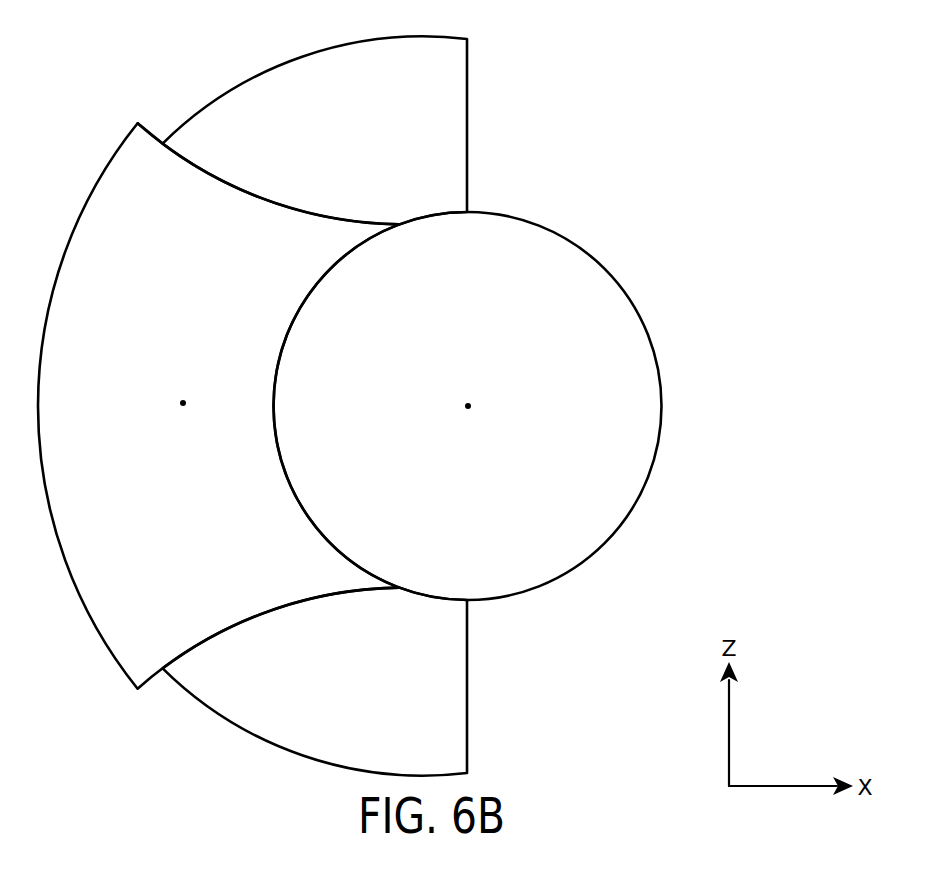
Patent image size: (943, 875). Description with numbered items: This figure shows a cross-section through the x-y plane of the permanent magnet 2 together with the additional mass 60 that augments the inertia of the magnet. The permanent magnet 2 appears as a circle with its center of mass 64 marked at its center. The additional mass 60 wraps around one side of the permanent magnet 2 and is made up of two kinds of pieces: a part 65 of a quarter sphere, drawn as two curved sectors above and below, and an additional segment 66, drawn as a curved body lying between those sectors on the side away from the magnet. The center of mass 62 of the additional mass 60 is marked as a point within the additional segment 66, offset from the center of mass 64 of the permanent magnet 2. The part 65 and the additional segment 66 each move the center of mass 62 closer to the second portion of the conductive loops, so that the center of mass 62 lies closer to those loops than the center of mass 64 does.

The permanent magnet 2 is at (585, 252).
The additional mass 60 is at (171, 128).
The center of mass of the additional mass 62 is at (183, 401).
The center of mass of the permanent magnet 64 is at (468, 404).
The part of a quarter sphere 65 is at (315, 405).
The additional segment 66 is at (218, 405).